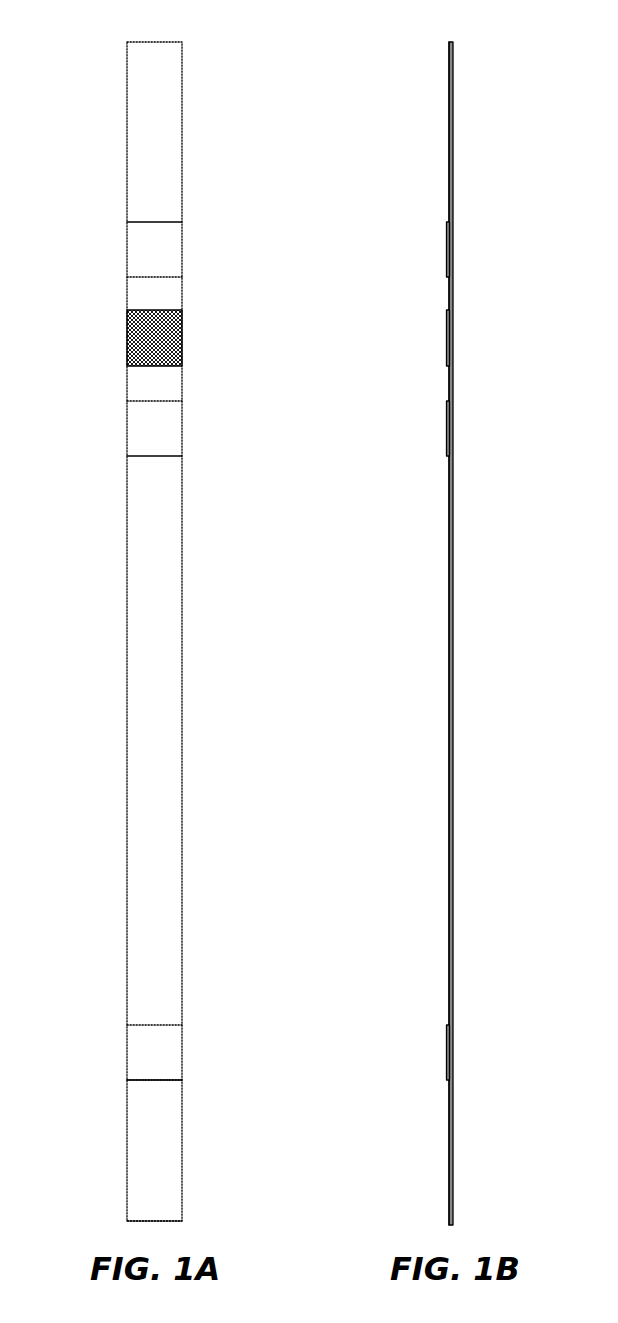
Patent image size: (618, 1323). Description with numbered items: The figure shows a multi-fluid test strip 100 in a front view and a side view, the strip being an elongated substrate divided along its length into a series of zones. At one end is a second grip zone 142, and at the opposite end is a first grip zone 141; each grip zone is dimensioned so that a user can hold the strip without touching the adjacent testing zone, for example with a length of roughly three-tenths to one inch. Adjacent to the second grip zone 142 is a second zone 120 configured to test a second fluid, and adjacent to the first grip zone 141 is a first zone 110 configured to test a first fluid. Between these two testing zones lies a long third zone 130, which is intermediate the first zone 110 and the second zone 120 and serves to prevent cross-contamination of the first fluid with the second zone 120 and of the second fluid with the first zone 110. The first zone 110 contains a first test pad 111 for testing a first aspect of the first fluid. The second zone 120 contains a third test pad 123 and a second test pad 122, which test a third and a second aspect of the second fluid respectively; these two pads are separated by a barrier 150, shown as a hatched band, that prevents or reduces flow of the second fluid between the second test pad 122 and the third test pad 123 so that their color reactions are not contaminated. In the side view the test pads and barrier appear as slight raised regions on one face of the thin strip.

In FIG. 1A, the multi-fluid test strip 100 is at (83, 61).
In FIG. 1B, the multi-fluid test strip 100 is at (371, 61).
In FIG. 1A, the second grip zone 142 is at (198, 47).
In FIG. 1B, the second grip zone 142 is at (463, 47).
In FIG. 1A, the second zone 120 is at (198, 228).
In FIG. 1B, the second zone 120 is at (463, 228).
In FIG. 1A, the third test pad 123 is at (150, 252).
In FIG. 1B, the third test pad 123 is at (446, 252).
In FIG. 1A, the barrier 150 is at (148, 341).
In FIG. 1B, the barrier 150 is at (446, 341).
In FIG. 1A, the second test pad 122 is at (150, 428).
In FIG. 1B, the second test pad 122 is at (446, 428).
In FIG. 1A, the third zone 130 is at (198, 463).
In FIG. 1B, the third zone 130 is at (463, 463).
In FIG. 1A, the first zone 110 is at (198, 1031).
In FIG. 1B, the first zone 110 is at (463, 1031).
In FIG. 1A, the first test pad 111 is at (150, 1058).
In FIG. 1B, the first test pad 111 is at (446, 1058).
In FIG. 1A, the first grip zone 141 is at (198, 1086).
In FIG. 1B, the first grip zone 141 is at (463, 1086).